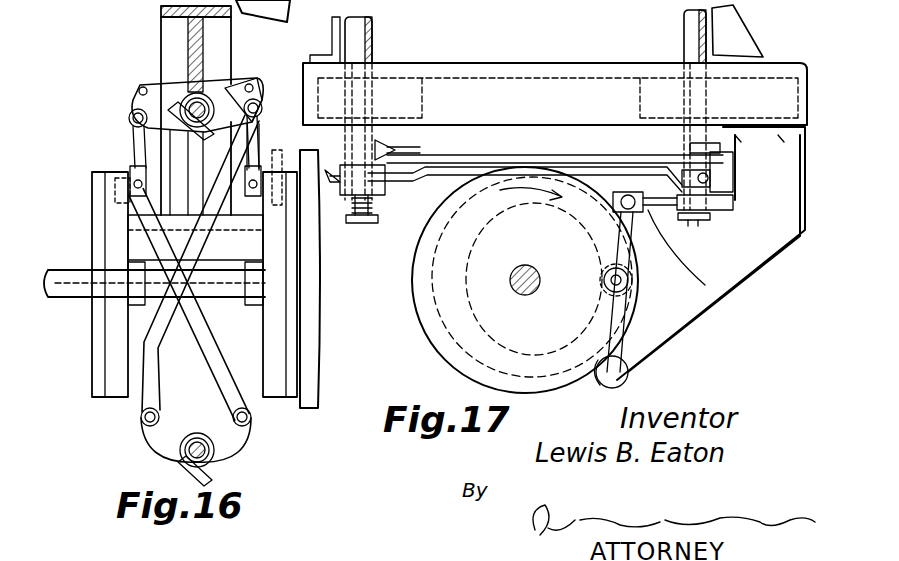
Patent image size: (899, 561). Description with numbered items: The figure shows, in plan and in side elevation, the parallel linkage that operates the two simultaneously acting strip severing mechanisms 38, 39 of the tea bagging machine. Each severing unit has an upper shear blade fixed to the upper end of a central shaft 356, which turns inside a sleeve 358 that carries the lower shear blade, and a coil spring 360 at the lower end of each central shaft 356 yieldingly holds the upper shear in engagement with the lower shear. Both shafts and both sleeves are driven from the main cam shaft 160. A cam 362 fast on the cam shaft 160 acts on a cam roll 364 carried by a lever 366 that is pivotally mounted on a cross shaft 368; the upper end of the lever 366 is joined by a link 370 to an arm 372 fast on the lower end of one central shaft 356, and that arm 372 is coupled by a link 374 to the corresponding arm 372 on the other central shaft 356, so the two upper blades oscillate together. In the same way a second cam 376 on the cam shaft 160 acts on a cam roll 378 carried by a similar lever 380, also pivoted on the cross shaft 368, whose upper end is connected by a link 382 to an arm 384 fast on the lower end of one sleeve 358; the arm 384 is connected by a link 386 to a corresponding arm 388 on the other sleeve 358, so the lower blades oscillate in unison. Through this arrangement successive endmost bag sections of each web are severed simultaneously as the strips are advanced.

In FIG. 16, the strip severing mechanism 38 is at (143, 460).
In FIG. 16, the strip severing mechanism 39 is at (150, 82).
In FIG. 16, the main cam shaft 160 is at (62, 292).
In FIG. 17, the main cam shaft 160 is at (518, 292).
In FIG. 16, the central shaft 356 is at (190, 100).
In FIG. 17, the central shaft 356 is at (365, 100).
In FIG. 16, the sleeve 358 is at (200, 95).
In FIG. 17, the sleeve 358 is at (373, 35).
In FIG. 17, the coil spring 360 is at (372, 208).
In FIG. 16, the cam 362 is at (112, 237).
In FIG. 16, the cam roll 364 is at (115, 188).
In FIG. 16, the lever 366 is at (140, 206).
In FIG. 17, the cross shaft 368 is at (630, 375).
In FIG. 16, the link 370 is at (130, 151).
In FIG. 16, the arm 372 is at (135, 111).
In FIG. 17, the arm 372 is at (385, 158).
In FIG. 16, the link 374 is at (206, 320).
In FIG. 17, the link 374 is at (583, 158).
In FIG. 17, the second cam 376 is at (306, 262).
In FIG. 16, the cam roll 378 is at (277, 178).
In FIG. 17, the cam roll 378 is at (313, 141).
In FIG. 16, the lever 380 is at (248, 206).
In FIG. 17, the lever 380 is at (648, 230).
In FIG. 17, the link 382 is at (313, 100).
In FIG. 16, the arm 384 is at (232, 85).
In FIG. 17, the arm 384 is at (733, 178).
In FIG. 16, the link 386 is at (160, 340).
In FIG. 17, the link 386 is at (640, 160).
In FIG. 16, the arm 388 is at (158, 438).
In FIG. 17, the arm 388 is at (388, 148).